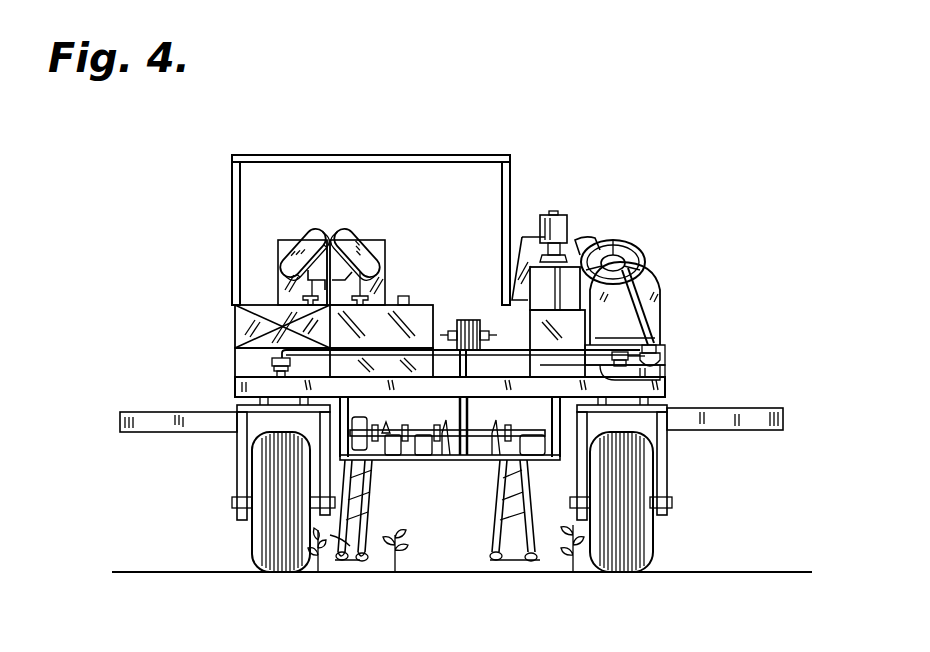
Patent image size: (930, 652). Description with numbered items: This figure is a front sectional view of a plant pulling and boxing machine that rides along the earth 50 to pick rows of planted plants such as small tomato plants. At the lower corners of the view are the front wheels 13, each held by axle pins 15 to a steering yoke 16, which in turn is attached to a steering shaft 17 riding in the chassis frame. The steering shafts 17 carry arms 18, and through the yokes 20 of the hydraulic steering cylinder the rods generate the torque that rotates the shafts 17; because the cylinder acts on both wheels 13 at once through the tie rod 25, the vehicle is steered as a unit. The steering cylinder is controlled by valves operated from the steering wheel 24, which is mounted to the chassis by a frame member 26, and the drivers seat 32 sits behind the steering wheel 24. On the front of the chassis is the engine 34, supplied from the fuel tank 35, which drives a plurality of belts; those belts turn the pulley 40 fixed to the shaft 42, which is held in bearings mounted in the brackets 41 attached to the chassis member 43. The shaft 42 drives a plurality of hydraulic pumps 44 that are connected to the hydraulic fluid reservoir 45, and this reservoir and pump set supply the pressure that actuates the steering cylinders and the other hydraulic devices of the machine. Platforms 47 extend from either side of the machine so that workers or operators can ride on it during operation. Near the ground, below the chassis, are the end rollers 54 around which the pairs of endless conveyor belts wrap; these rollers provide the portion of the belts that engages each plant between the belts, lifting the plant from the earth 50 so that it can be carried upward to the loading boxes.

The front wheels 13 is at (650, 542).
The axle pins 15 is at (672, 502).
The steering yoke 16 is at (666, 475).
The steering shaft 17 is at (640, 380).
The arms 18 is at (657, 362).
The yokes 20 is at (656, 348).
The steering wheel 24 is at (632, 242).
The tie rod 25 is at (415, 345).
The frame member 26 is at (640, 300).
The drivers seat 32 is at (650, 270).
The engine 34 is at (522, 320).
The fuel tank 35 is at (240, 318).
The pulley 40 is at (485, 422).
The brackets 41 is at (445, 457).
The shaft 42 is at (428, 408).
The chassis member 43 is at (465, 460).
The hydraulic pumps 44 is at (395, 460).
The hydraulic fluid reservoir 45 is at (415, 320).
The platforms 47 is at (770, 408).
The earth 50 is at (197, 572).
The end rollers 54 is at (330, 572).